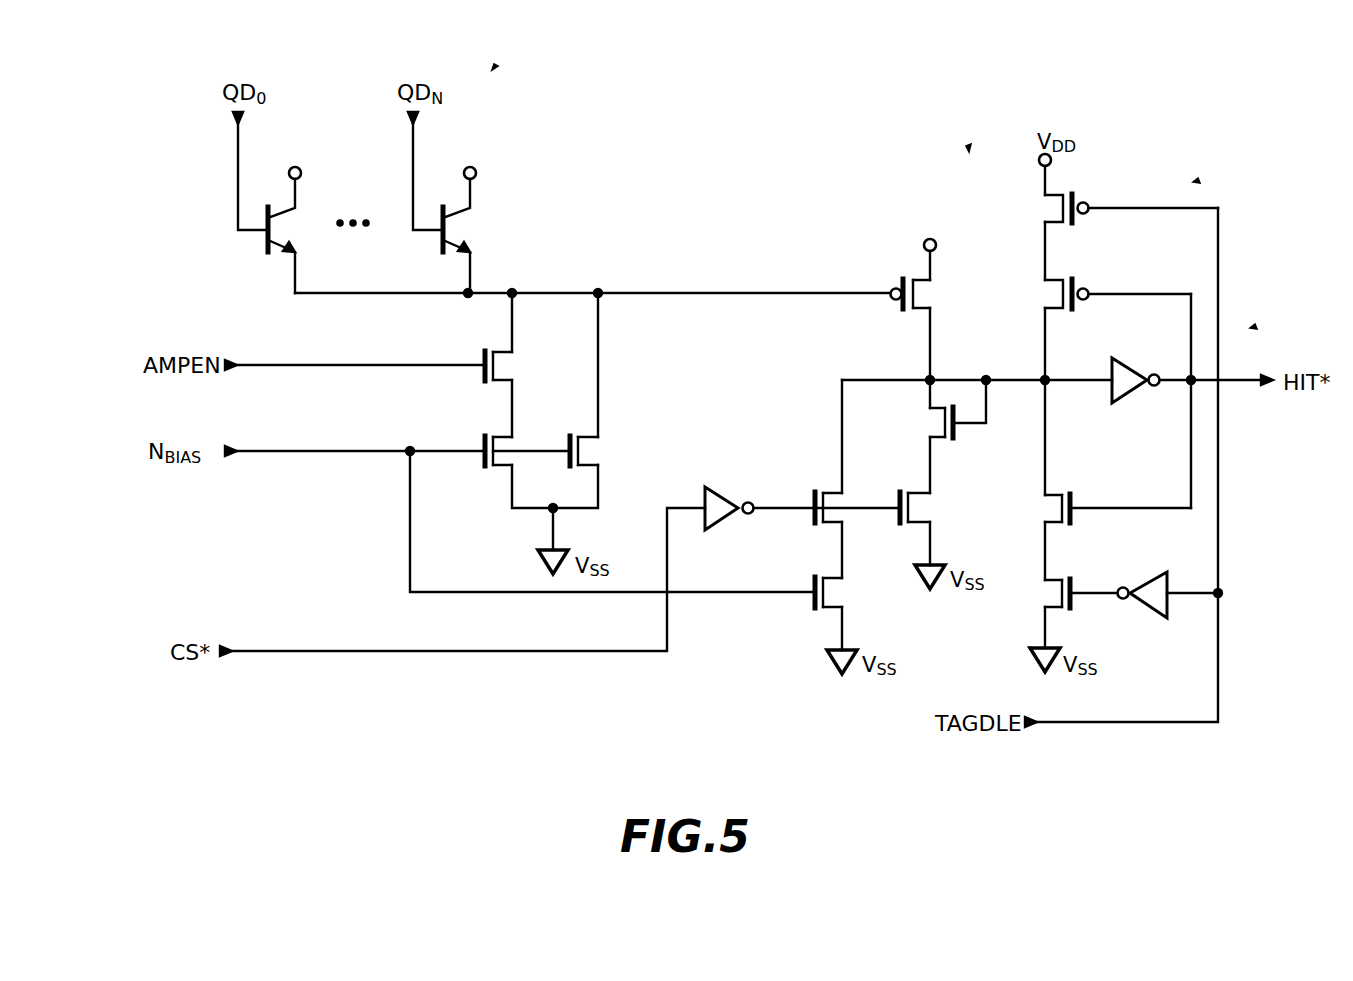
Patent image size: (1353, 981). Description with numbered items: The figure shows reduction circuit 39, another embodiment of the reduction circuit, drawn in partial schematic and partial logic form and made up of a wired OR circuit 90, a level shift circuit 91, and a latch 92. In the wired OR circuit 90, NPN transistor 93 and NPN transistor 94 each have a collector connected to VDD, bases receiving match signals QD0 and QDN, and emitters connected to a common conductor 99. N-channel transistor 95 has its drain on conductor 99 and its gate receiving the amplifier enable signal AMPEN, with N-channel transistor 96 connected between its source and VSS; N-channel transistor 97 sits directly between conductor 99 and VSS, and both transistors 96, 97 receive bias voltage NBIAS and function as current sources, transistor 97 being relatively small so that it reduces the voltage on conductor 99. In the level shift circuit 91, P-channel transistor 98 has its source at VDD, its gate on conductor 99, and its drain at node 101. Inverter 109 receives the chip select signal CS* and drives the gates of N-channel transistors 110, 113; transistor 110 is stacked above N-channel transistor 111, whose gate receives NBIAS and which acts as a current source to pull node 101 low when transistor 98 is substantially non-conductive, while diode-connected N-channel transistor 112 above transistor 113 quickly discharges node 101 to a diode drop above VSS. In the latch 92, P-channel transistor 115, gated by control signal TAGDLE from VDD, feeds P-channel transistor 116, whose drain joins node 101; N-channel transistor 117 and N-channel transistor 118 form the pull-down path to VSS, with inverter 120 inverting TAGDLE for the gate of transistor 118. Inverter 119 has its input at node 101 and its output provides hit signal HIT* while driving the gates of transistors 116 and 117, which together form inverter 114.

The wired OR circuit 90 is at (494, 64).
The level shift circuit 91 is at (966, 146).
The latch 92 is at (1198, 178).
The NPN transistor 93 is at (268, 254).
The NPN transistor 94 is at (443, 254).
The N-channel transistor 95 is at (482, 376).
The N-channel transistor 96 is at (482, 462).
The N-channel transistor 97 is at (572, 437).
The P-channel transistor 98 is at (903, 280).
The conductor 99 is at (748, 293).
The node 101 is at (1057, 368).
The inverter 109 is at (726, 500).
The N-channel transistor 110 is at (815, 524).
The N-channel transistor 111 is at (815, 609).
The N-channel transistor 112 is at (953, 438).
The N-channel transistor 113 is at (900, 494).
The inverter 114 is at (1255, 324).
The P-channel transistor 115 is at (1074, 224).
The P-channel transistor 116 is at (1074, 310).
The N-channel transistor 117 is at (1072, 496).
The N-channel transistor 118 is at (1072, 582).
The inverter 119 is at (1134, 394).
The inverter 120 is at (1143, 614).
The reduction circuit 39 is at (725, 779).